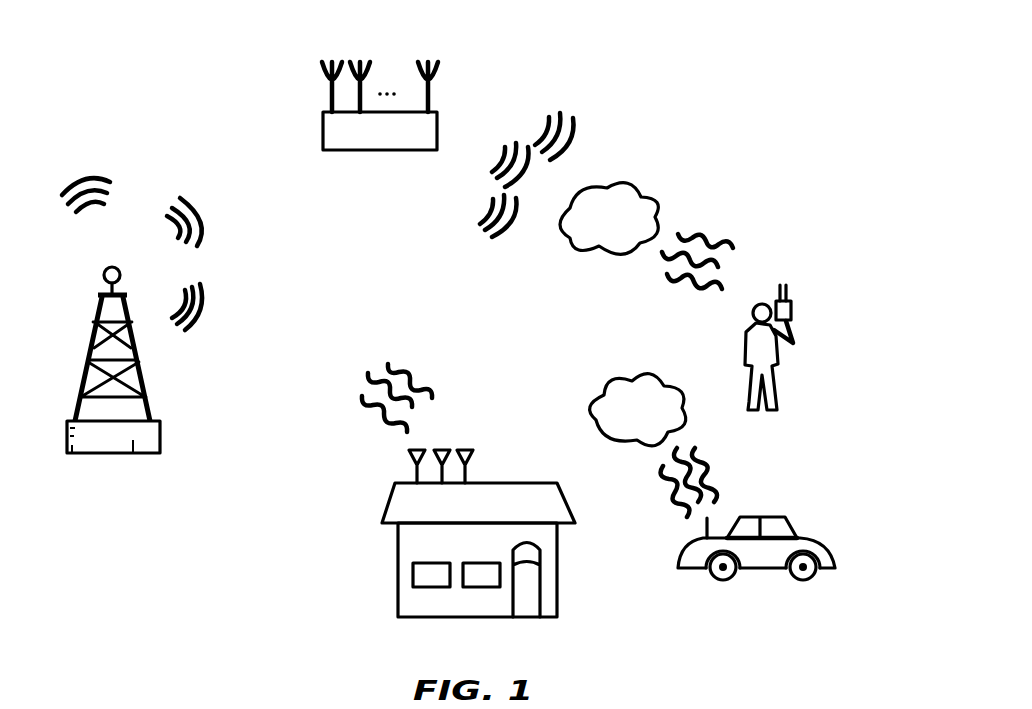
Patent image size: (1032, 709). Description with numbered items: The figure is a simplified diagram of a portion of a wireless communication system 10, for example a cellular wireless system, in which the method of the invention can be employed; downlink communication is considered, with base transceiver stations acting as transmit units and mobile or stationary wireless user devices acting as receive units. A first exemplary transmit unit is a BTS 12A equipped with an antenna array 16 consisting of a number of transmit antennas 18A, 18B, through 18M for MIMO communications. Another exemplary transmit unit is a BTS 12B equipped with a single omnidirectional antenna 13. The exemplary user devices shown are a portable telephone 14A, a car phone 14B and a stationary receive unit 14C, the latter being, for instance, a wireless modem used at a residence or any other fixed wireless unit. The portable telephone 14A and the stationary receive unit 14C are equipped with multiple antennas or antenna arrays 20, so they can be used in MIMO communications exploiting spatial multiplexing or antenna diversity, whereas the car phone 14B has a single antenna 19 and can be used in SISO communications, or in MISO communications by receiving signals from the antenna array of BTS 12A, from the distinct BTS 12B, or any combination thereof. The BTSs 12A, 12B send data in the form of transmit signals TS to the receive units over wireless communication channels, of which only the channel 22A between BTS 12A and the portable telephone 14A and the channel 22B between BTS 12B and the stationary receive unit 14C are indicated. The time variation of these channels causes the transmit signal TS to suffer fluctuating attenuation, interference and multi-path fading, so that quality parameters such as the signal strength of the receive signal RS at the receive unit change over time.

The wireless communication system 10 is at (772, 79).
The antenna array 16 is at (244, 70).
The BTS 12A is at (323, 129).
The transmit antenna 18A is at (327, 92).
The transmit antenna 18B is at (366, 91).
The transmit antenna 18M is at (433, 91).
The single omnidirectional antenna 13 is at (104, 272).
The BTS 12B is at (161, 430).
The transmit signal TS is at (226, 251).
The receive signal RS is at (728, 215).
The channel 22A is at (578, 257).
The channel 22B is at (600, 384).
The portable telephone 14A is at (792, 306).
The car phone 14B is at (822, 537).
The stationary receive unit 14C is at (498, 482).
The antenna array 20 is at (814, 278).
The single antenna 19 is at (706, 533).